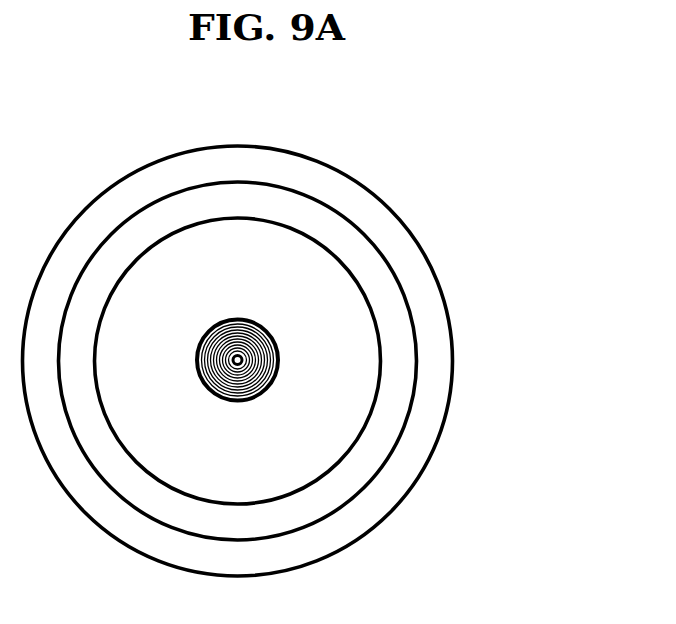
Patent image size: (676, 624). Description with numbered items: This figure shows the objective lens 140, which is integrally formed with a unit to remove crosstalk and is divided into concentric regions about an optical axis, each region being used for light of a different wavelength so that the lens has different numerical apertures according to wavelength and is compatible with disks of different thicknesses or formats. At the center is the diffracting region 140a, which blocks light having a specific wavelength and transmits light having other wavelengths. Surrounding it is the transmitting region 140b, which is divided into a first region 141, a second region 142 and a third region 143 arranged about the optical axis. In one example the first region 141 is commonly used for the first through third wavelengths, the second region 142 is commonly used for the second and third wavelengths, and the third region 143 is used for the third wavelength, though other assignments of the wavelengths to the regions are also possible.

The objective lens 140 is at (321, 335).
The diffracting region 140a is at (277, 343).
The transmitting region 140b is at (321, 361).
The first region 141 is at (360, 357).
The second region 142 is at (400, 389).
The third region 143 is at (538, 320).